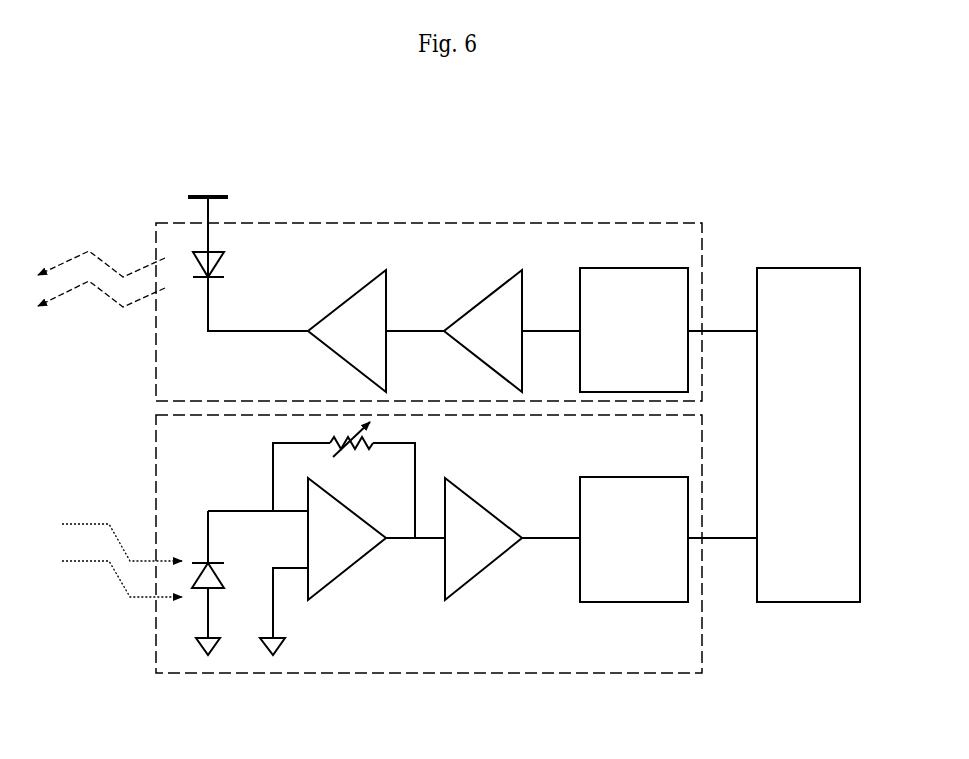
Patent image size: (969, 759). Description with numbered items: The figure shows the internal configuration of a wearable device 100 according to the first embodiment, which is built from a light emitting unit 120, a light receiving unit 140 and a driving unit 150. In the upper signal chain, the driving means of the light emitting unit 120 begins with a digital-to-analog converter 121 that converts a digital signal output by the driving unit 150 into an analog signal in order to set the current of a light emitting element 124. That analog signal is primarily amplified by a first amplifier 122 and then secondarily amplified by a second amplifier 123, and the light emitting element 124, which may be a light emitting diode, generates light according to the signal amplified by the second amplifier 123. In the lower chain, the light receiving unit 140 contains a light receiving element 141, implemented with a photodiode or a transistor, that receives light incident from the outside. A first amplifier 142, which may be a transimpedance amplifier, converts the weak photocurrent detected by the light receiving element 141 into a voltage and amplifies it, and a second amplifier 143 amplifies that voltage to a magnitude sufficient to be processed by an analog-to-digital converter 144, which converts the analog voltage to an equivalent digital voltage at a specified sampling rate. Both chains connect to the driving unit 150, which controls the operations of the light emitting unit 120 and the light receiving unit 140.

The wearable device 100 is at (152, 120).
The light emitting unit 120 is at (452, 223).
The digital-to-analog converter 121 is at (632, 268).
The first amplifier 122 is at (497, 283).
The second amplifier 123 is at (373, 278).
The light emitting element 124 is at (225, 265).
The light receiving unit 140 is at (452, 673).
The light receiving element 141 is at (218, 575).
The first amplifier 142 is at (348, 572).
The second amplifier 143 is at (490, 565).
The analog-to-digital converter 144 is at (633, 602).
The driving unit 150 is at (807, 268).